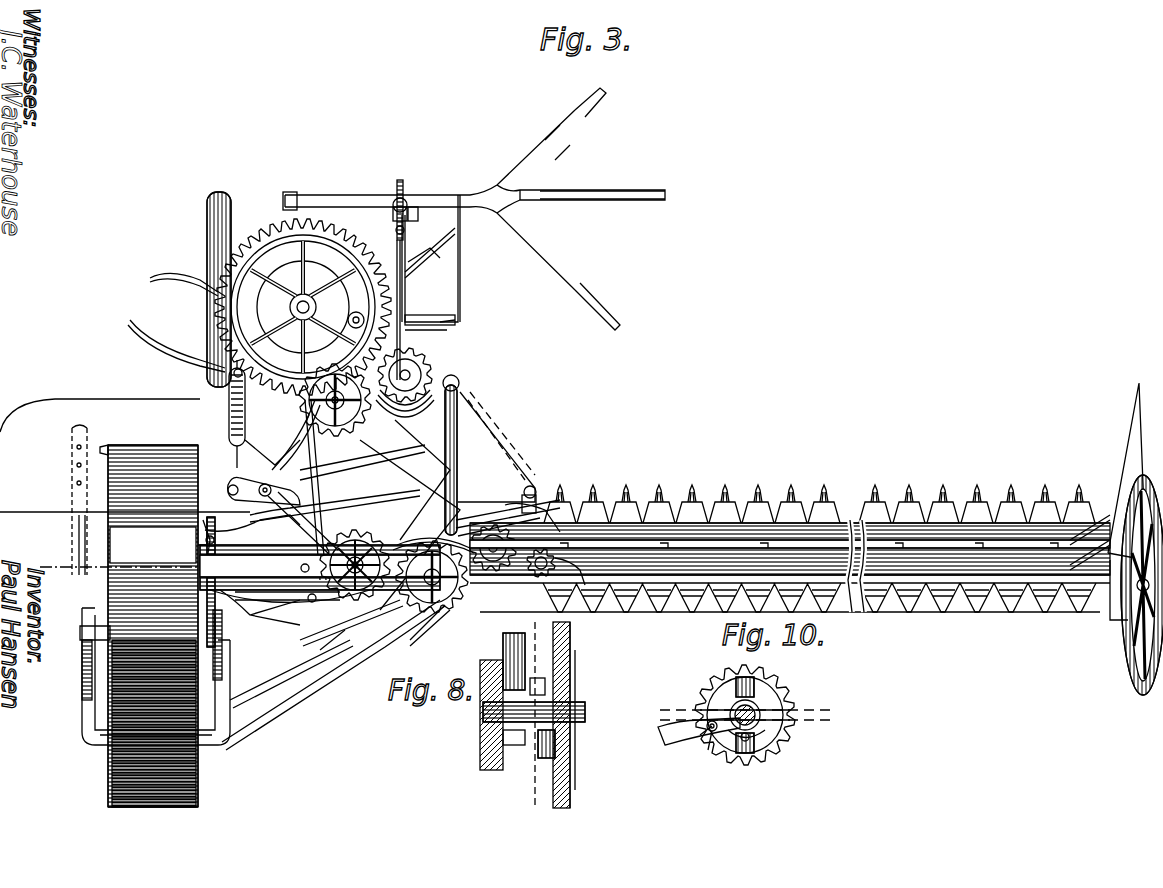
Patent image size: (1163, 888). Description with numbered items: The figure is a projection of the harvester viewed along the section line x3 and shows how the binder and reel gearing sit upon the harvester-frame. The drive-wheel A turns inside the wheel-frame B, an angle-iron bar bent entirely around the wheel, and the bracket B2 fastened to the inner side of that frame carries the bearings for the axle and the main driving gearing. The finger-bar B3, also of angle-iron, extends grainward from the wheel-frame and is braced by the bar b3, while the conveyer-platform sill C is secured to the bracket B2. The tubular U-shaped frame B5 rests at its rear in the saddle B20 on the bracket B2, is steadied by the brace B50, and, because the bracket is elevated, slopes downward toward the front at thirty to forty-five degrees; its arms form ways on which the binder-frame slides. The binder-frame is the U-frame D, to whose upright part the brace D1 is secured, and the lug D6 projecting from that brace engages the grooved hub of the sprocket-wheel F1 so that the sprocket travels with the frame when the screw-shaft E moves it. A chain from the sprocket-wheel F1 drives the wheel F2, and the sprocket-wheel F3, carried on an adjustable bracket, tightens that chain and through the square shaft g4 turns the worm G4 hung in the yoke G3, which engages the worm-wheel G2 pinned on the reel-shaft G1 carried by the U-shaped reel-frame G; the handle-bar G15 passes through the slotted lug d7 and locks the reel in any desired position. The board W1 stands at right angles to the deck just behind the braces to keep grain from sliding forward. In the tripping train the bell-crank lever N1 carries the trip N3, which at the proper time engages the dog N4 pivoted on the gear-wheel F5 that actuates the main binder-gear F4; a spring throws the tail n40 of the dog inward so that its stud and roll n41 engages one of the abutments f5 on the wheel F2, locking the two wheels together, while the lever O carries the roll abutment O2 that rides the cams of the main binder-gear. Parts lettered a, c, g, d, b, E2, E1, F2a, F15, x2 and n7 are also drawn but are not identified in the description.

In FIG. 3, the drive-wheel A is at (149, 626).
In FIG. 3, the board W1 is at (53, 500).
In FIG. 3, the frame bracket a is at (80, 632).
In FIG. 3, the pivot c is at (196, 550).
In FIG. 3, the section line x3 is at (139, 566).
In FIG. 3, the bracket B2 is at (228, 222).
In FIG. 3, the main binder-gear F4 is at (218, 308).
In FIG. 3, the lever O is at (234, 372).
In FIG. 3, the stud and roll abutment O2 is at (359, 310).
In FIG. 3, the main drive gear g is at (303, 307).
In FIG. 3, the reel-shaft G1 is at (360, 195).
In FIG. 3, the worm G4 is at (405, 200).
In FIG. 3, the worm-wheel G2 is at (384, 220).
In FIG. 3, the yoke or swinging bracket G3 is at (417, 221).
In FIG. 3, the reel-frame G is at (462, 258).
In FIG. 3, the handle-bar G15 is at (440, 250).
In FIG. 3, the square shaft g4 is at (425, 264).
In FIG. 3, the sprocket-wheel F3 is at (421, 315).
In FIG. 3, the slotted lug d7 is at (440, 332).
In FIG. 3, the pulley F2a is at (405, 382).
In FIG. 3, the intermediate gear E2 is at (340, 412).
In FIG. 3, the pitman rod d is at (456, 455).
In FIG. 3, the trip N3 is at (264, 414).
In FIG. 3, the bell-crank lever N1 is at (283, 490).
In FIG. 3, the screw-shaft E is at (312, 500).
In FIG. 3, the U-frame D is at (380, 515).
In FIG. 3, the brace D1 is at (410, 600).
In FIG. 3, the brace bar b3 is at (350, 600).
In FIG. 3, the lug D6 is at (421, 631).
In FIG. 3, the gear train x2 is at (527, 568).
In FIG. 3, the tubular frame B5 is at (458, 410).
In FIG. 3, the brace B50 is at (492, 450).
In FIG. 3, the saddle B20 is at (537, 495).
In FIG. 3, the wheel-frame B is at (250, 708).
In FIG. 3, the finger-bar B3 is at (260, 611).
In FIG. 3, the rod E1 is at (351, 635).
In FIG. 3, the sprocket-wheel F1 is at (332, 648).
In FIG. 3, the pin b is at (307, 583).
In FIG. 3, the conveyer-platform sill C is at (850, 612).
In FIG. 3, the grain wheel is at (1135, 539).
In FIG. 8, the sprocket-wheel F2 is at (575, 745).
In FIG. 8, the hub F15 is at (487, 688).
In FIG. 8, the dog N4 is at (570, 650).
In FIG. 10, the dog N4 is at (691, 743).
In FIG. 8, the stud and roll n41 is at (545, 687).
In FIG. 10, the stud and roll n41 is at (701, 752).
In FIG. 8, the abutment f5 is at (540, 760).
In FIG. 10, the gear-wheel F5 is at (790, 690).
In FIG. 10, the pawl n7 is at (700, 714).
In FIG. 10, the tail of dog n40 is at (752, 740).